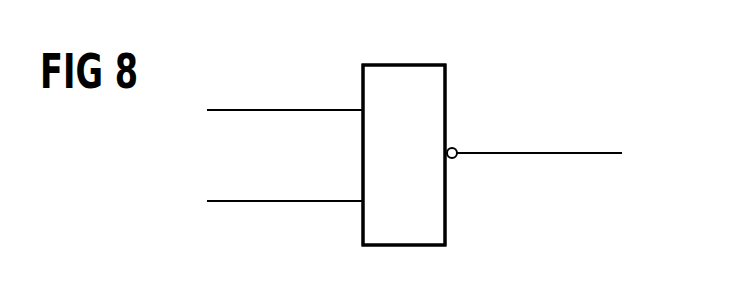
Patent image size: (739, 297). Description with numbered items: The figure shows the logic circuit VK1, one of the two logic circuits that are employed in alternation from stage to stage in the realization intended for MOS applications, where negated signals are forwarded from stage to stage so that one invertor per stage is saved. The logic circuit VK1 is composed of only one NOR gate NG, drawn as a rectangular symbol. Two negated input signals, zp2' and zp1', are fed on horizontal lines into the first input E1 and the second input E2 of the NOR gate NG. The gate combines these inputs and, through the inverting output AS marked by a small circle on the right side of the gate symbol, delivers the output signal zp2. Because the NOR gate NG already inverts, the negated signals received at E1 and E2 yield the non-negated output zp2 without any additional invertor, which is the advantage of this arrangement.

The logic circuit VKI VK1 is at (522, 88).
The NOR gate NG is at (433, 218).
The first input E1 is at (296, 103).
The second input E2 is at (301, 201).
The output AS is at (518, 158).
The input signal zp2' is at (285, 88).
The input signal zp1' is at (285, 175).
The output signal zp2 is at (539, 127).